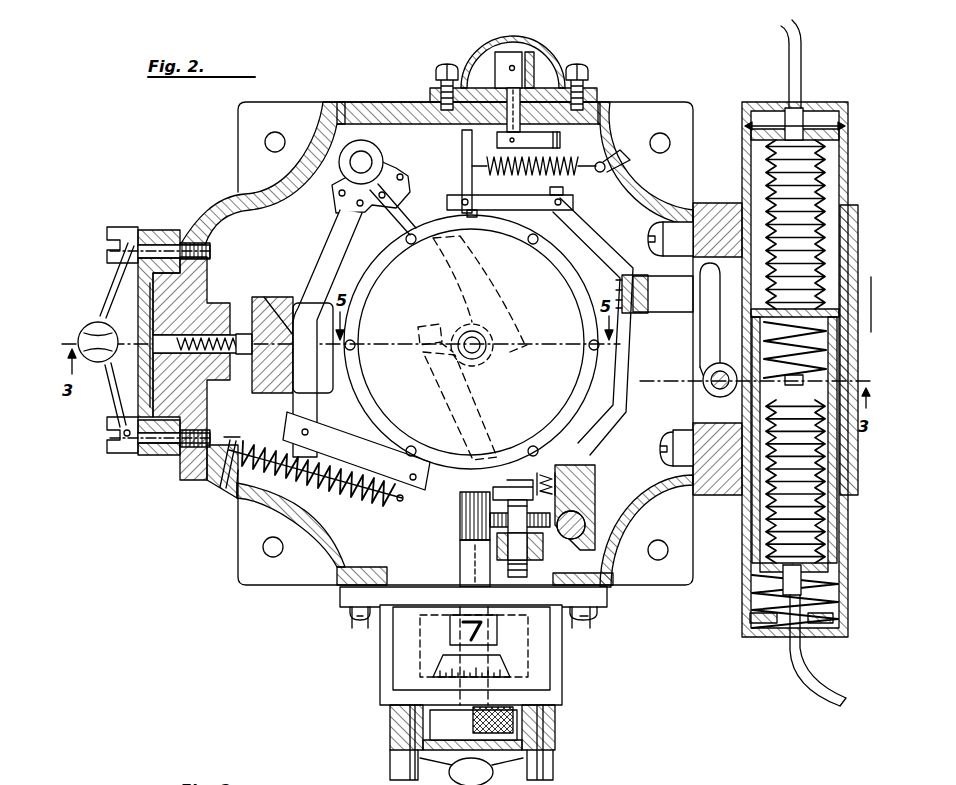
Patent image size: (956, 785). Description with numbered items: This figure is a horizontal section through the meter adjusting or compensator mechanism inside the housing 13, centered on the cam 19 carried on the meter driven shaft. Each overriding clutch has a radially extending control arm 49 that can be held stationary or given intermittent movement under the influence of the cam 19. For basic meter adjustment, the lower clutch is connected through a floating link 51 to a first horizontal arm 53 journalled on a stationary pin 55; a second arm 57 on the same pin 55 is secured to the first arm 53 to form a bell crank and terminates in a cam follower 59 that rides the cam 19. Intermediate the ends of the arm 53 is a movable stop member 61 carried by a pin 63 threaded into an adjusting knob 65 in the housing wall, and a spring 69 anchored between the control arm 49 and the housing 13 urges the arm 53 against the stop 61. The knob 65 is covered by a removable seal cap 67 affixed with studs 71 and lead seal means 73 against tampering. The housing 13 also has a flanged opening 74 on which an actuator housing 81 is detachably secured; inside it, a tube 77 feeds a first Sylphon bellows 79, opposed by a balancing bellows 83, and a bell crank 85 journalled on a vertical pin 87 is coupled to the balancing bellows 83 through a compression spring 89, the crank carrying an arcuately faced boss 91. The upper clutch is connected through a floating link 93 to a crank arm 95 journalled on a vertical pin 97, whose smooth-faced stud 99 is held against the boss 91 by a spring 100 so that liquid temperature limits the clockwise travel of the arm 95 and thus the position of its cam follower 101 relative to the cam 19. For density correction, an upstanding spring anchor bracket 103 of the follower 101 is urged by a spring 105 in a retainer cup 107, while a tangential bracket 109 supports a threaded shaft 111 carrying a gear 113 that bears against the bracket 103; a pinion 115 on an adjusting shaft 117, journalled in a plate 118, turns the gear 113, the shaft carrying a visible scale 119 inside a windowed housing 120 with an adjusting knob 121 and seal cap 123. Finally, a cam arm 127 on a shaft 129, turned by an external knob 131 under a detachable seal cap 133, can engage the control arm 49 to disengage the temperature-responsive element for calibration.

The housing 13 is at (290, 505).
The cam 19 is at (466, 324).
The control arm 49 is at (462, 188).
The floating link 51 is at (370, 438).
The first horizontal arm 53 is at (323, 270).
The stationary pin 55 is at (360, 156).
The second arm 57 is at (404, 229).
The cam follower 59 is at (519, 318).
The movable stop member 61 is at (261, 291).
The pin 63 is at (236, 333).
The adjusting knob 65 is at (153, 370).
The removable seal cap 67 is at (122, 393).
The spring 69 is at (311, 476).
The studs 71 is at (114, 232).
The lead seal means 73 is at (93, 320).
The flanged opening 74 is at (692, 242).
The tube 77 is at (808, 698).
The first Sylphon bellows 79 is at (780, 513).
The actuator housing 81 is at (720, 494).
The balancing bellows 83 is at (808, 193).
The bell crank 85 is at (710, 356).
The vertical pin 87 is at (700, 390).
The compression spring 89 is at (778, 354).
The arcuately faced boss 91 is at (700, 305).
The floating link 93 is at (516, 206).
The crank arm 95 is at (582, 239).
The vertical pin 97 is at (588, 560).
The smooth-faced stud 99 is at (648, 280).
The spring 100 is at (528, 176).
The cam follower 101 is at (428, 368).
The spring anchor bracket 103 is at (463, 437).
The spring 105 is at (560, 470).
The retainer cup 107 is at (596, 470).
The tangential bracket 109 is at (543, 553).
The threaded shaft 111 is at (532, 586).
The gear 113 is at (503, 518).
The pinion 115 is at (466, 500).
The adjusting shaft 117 is at (466, 567).
The plate 118 is at (393, 585).
The visible scale 119 is at (450, 632).
The windowed housing 120 is at (567, 662).
The adjusting knob 121 is at (392, 728).
The seal cap 123 is at (558, 732).
The cam arm 127 is at (558, 140).
The shaft 129 is at (472, 135).
The external knob 131 is at (502, 63).
The detachable seal cap 133 is at (553, 56).